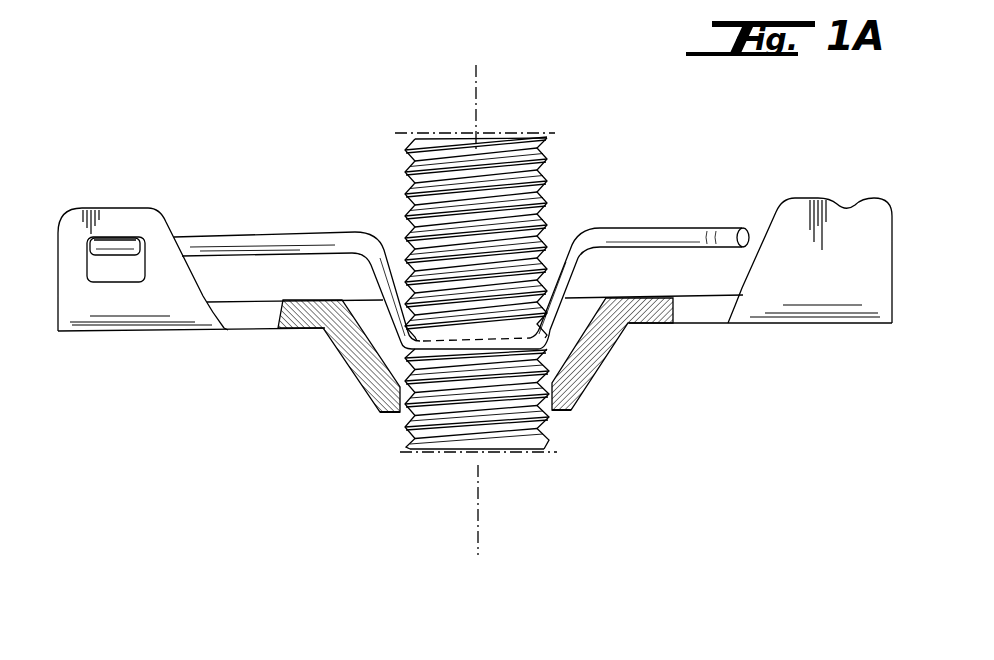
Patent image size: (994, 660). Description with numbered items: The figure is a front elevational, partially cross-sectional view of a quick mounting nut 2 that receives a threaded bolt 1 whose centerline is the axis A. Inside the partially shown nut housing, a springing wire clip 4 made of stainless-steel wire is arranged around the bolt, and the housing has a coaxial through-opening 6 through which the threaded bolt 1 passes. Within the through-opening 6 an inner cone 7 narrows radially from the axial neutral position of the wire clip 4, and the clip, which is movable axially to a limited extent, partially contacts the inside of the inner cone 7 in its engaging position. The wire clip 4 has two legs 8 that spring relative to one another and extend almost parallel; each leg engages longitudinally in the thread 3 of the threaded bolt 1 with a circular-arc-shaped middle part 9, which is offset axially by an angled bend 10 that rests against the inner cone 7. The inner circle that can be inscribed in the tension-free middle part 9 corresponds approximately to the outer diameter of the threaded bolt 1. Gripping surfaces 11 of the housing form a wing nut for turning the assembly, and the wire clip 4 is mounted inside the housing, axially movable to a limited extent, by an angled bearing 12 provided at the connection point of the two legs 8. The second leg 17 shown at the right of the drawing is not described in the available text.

The bolt / threaded screw 1 is at (439, 144).
The sheet-metal clip (fastening element) 2 is at (294, 102).
The thread of bolt 3 is at (405, 176).
The bend of clip leg 4 is at (346, 226).
The bottom face of nut 6 is at (400, 392).
The conical nut body 7 is at (372, 352).
The strip / leg of clip 8 is at (266, 236).
The thread engagement region 9 is at (484, 356).
The clip legs / arms 10 is at (387, 320).
The component to be fastened 11 is at (876, 261).
The slot in component 12 is at (118, 240).
The rod / wire leg of clip 17 is at (736, 229).
The bolt axis A is at (477, 92).